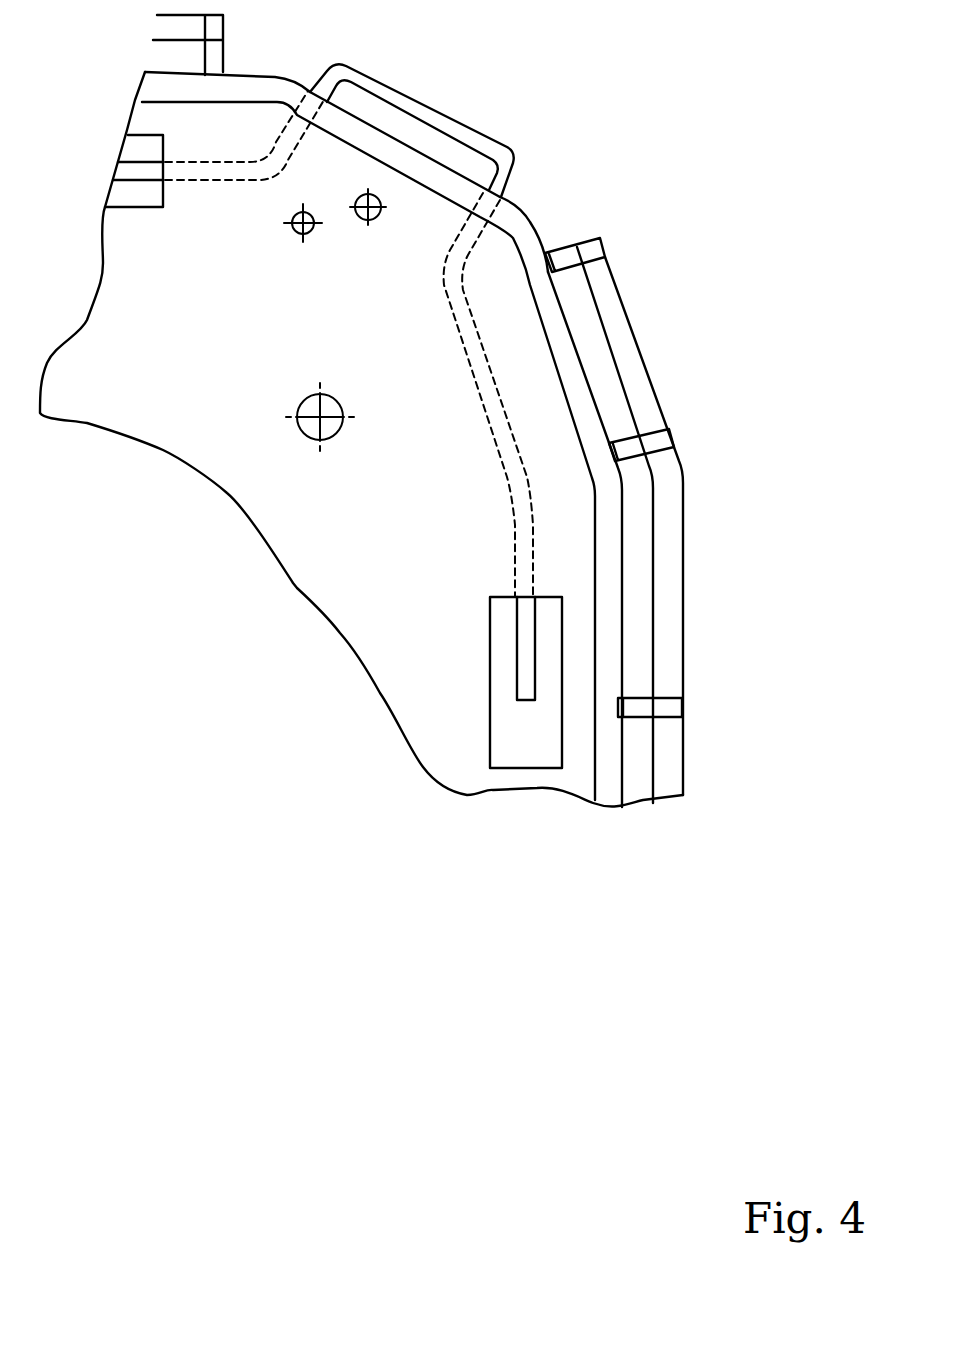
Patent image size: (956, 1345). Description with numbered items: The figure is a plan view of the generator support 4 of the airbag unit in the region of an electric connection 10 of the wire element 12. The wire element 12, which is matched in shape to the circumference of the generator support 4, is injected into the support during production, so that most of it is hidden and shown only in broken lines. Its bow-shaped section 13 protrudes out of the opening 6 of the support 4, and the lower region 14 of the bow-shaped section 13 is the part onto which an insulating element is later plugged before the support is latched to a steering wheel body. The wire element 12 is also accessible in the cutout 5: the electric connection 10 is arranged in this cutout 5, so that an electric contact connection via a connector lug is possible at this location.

The generator support 4 is at (411, 508).
The cutout 5 is at (543, 620).
The opening 6 is at (496, 208).
The electric connection 10 is at (535, 679).
The wire element 12 is at (487, 358).
The bow-shaped section 13 is at (522, 177).
The lower region 14 is at (427, 100).